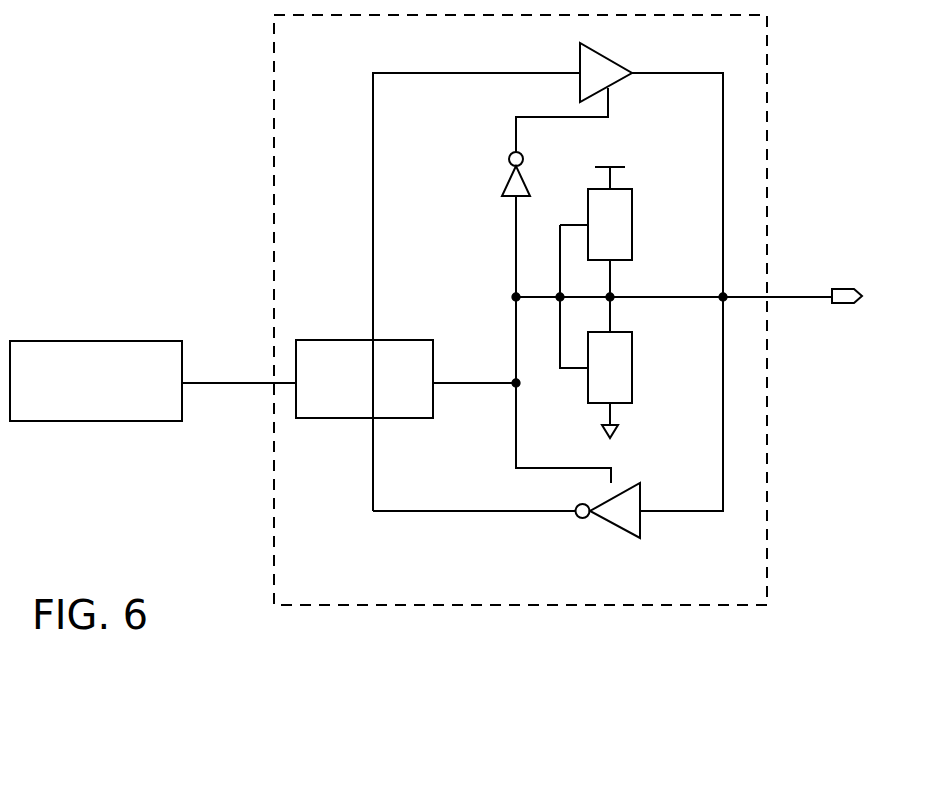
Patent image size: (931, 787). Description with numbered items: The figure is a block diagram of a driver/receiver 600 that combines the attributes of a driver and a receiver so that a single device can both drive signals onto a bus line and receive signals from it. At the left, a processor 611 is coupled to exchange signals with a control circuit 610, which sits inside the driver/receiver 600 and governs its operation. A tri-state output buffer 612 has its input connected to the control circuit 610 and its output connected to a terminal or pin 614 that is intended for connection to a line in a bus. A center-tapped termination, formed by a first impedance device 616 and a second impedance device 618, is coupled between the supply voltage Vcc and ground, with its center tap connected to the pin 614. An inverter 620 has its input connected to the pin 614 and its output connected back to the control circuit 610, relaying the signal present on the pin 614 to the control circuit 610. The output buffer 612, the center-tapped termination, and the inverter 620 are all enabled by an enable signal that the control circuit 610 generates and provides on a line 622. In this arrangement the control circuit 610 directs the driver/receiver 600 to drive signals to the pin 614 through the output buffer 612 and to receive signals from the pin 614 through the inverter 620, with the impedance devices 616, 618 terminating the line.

The driver/receiver 600 is at (270, 62).
The control circuit 610 is at (332, 340).
The processor 611 is at (97, 341).
The tri-state output buffer 612 is at (606, 58).
The terminal or pin 614 is at (836, 289).
The first impedance device 616 is at (633, 225).
The second impedance device 618 is at (633, 368).
The inverter 620 is at (615, 528).
The line 622 is at (479, 382).